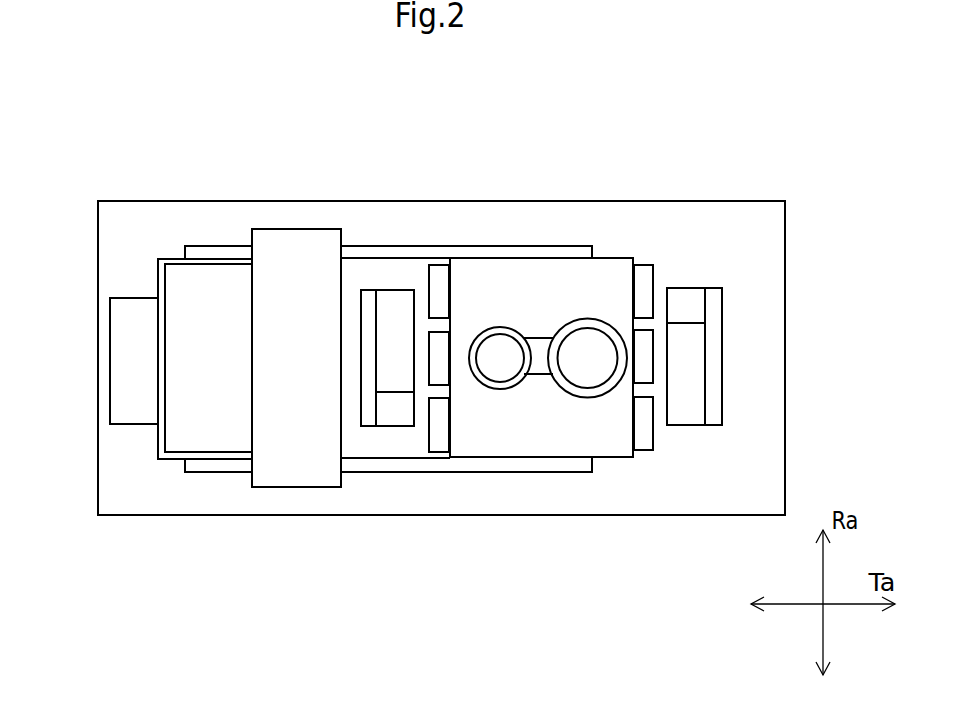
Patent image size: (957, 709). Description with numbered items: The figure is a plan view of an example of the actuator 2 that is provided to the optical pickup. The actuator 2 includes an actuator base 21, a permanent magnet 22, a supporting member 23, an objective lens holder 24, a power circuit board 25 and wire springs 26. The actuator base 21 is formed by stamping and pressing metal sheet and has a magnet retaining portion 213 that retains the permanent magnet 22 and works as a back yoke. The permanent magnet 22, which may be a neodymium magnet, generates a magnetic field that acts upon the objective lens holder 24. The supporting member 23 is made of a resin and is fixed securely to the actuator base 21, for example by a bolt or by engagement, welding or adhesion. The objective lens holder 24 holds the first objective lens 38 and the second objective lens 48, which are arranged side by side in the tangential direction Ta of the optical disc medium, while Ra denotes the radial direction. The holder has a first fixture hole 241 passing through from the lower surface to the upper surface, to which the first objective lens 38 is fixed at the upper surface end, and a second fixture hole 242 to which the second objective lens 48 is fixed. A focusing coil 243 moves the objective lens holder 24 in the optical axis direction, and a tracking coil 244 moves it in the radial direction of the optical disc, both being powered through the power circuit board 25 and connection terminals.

The actuator 2 is at (104, 176).
The actuator base 21 is at (123, 265).
The permanent magnet 22 is at (392, 317).
The supporting member 23 is at (228, 389).
The objective lens holder 24 is at (547, 282).
The power circuit board 25 is at (162, 337).
The wire springs 26 is at (472, 252).
The first objective lens 38 is at (587, 353).
The second objective lens 48 is at (499, 343).
The magnet retaining portion 213 is at (369, 392).
The first fixture hole 241 is at (597, 397).
The second fixture hole 242 is at (520, 377).
The focusing coil 243 is at (444, 345).
The tracking coil 244 is at (435, 290).